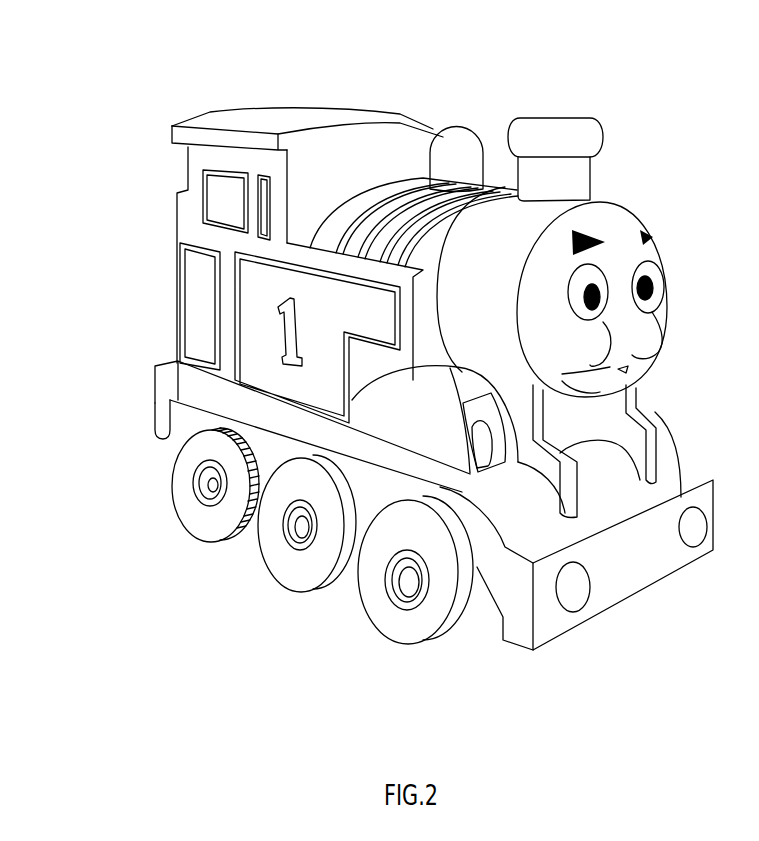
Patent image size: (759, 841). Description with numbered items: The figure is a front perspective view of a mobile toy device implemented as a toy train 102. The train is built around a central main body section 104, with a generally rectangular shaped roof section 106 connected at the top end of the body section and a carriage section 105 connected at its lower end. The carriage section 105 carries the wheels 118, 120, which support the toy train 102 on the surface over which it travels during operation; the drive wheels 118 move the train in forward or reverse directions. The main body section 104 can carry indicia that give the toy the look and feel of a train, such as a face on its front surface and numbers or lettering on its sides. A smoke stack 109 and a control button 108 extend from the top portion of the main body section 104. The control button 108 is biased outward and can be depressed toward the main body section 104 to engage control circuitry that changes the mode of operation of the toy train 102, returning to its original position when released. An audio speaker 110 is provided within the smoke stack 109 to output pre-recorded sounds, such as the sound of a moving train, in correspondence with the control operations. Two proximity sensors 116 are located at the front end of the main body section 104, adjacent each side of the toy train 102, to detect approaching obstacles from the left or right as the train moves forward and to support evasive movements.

The toy train 102 is at (624, 92).
The central main body section 104 is at (228, 293).
The carriage section 105 is at (183, 414).
The roof section 106 is at (218, 118).
The control button 108 is at (457, 142).
The smoke stack 109 is at (583, 175).
The audio speaker 110 is at (567, 117).
The proximity sensors 116 is at (495, 460).
The drive wheels 118 is at (208, 520).
The wheels 120 is at (348, 590).